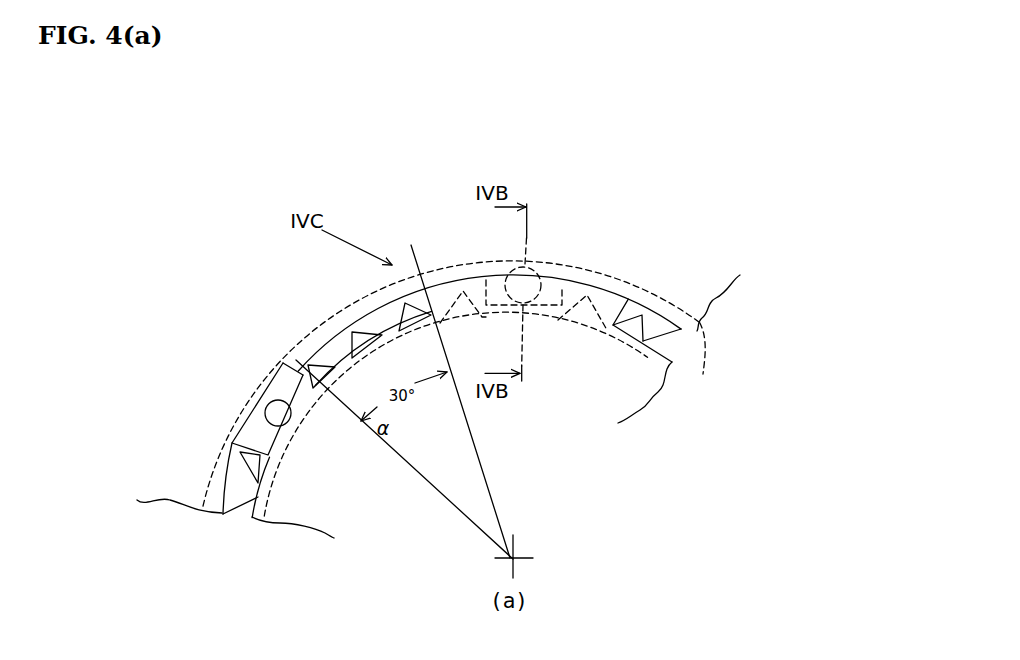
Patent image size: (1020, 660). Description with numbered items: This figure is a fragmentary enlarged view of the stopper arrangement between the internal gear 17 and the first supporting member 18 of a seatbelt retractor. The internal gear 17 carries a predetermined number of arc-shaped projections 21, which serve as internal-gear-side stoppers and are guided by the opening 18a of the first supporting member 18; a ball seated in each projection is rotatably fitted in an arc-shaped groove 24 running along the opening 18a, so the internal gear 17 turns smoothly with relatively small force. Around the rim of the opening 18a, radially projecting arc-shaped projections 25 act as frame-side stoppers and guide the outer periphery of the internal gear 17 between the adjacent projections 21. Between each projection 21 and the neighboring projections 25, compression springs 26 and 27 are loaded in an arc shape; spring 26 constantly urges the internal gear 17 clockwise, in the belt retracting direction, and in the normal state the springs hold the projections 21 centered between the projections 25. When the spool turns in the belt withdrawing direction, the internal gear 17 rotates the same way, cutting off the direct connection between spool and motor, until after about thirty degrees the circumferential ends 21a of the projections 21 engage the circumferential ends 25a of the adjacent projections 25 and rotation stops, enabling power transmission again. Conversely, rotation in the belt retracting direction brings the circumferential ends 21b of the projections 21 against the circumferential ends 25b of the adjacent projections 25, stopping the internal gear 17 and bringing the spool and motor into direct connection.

The internal gear 17 is at (297, 508).
The first supporting member 18 is at (162, 493).
The opening 18a is at (226, 490).
The arc-shaped projections 21 is at (574, 296).
The circumferential ends 21a is at (427, 307).
The circumferential ends 21b is at (617, 313).
The arc-shaped groove 24 is at (459, 383).
The arc-shaped projections 25 is at (283, 383).
The circumferential ends 25a is at (302, 372).
The circumferential ends 25b is at (240, 456).
The compression spring 26 is at (340, 330).
The compression spring 27 is at (657, 317).